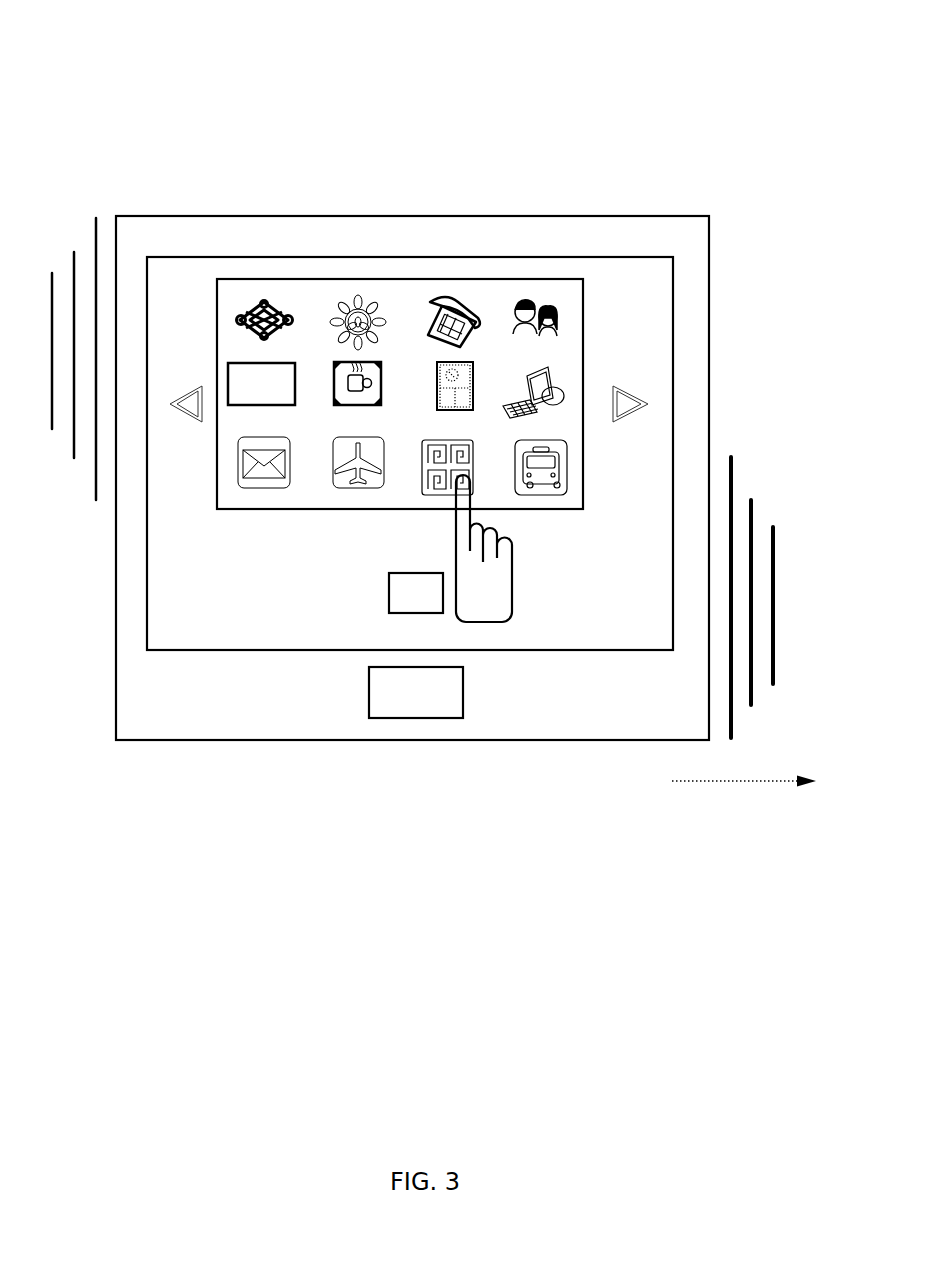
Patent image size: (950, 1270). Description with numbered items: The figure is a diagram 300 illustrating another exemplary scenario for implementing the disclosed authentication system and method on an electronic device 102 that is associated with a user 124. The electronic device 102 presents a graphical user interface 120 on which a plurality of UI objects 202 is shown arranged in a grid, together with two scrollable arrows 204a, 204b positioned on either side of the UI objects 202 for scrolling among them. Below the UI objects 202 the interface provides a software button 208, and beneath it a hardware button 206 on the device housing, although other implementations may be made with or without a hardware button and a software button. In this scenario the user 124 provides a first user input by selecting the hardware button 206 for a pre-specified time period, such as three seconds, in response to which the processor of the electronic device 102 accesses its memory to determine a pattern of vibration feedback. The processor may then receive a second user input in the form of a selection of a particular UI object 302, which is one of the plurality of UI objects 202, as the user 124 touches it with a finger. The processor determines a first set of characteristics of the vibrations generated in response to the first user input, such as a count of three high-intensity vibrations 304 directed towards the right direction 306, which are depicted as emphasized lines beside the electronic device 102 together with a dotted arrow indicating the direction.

The diagram 300 is at (560, 52).
The electronic device 102 is at (240, 216).
The graphical user interface 120 is at (302, 256).
The plurality of UI objects 202 is at (400, 394).
The UI object 302 is at (470, 448).
The scrollable arrow 204a is at (193, 418).
The scrollable arrow 204b is at (637, 382).
The software button 208 is at (389, 595).
The hardware button 206 is at (384, 718).
The user 124 is at (508, 618).
The high-intensity vibrations 304 is at (731, 474).
The right direction 306 is at (715, 781).